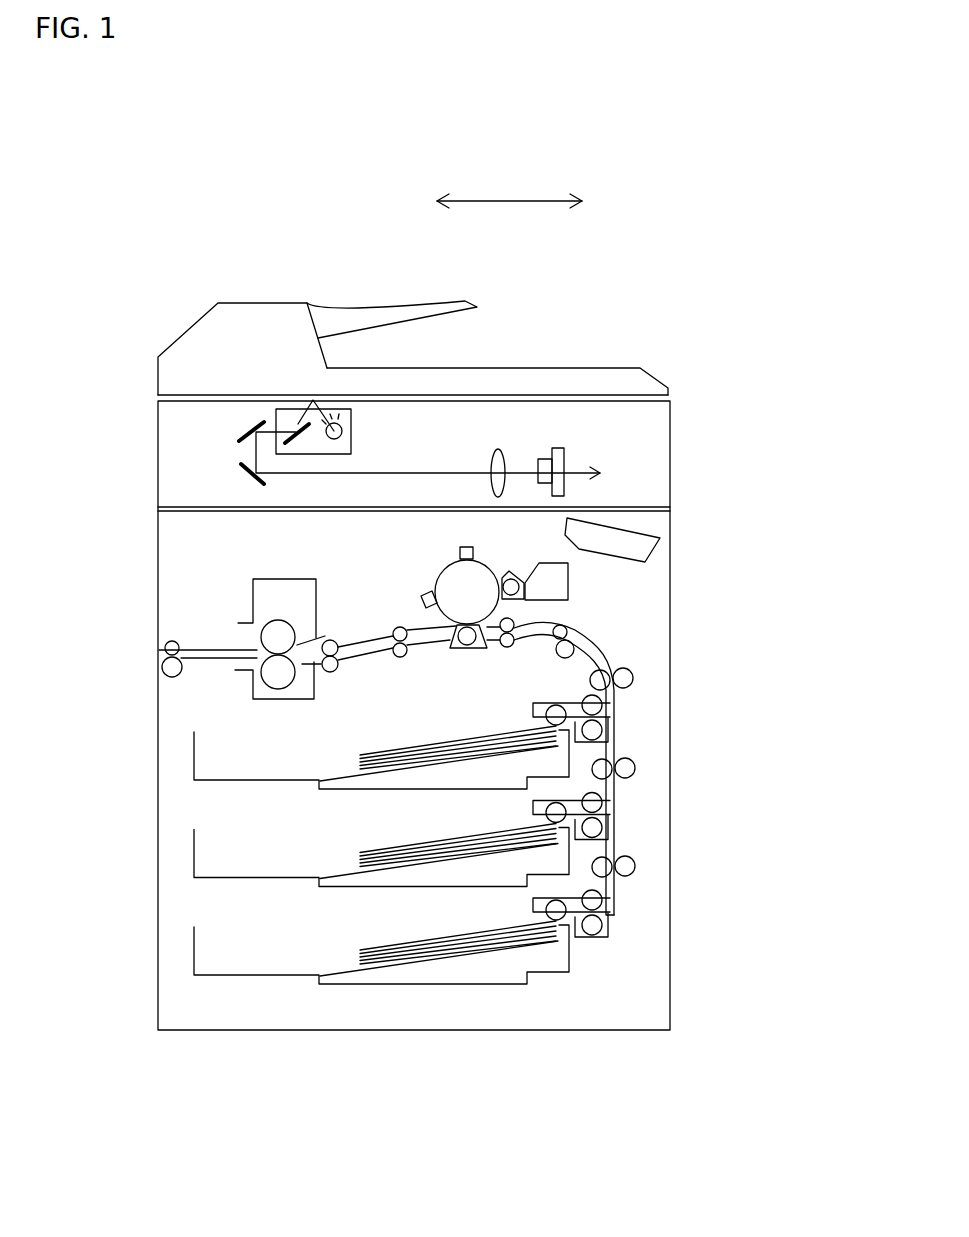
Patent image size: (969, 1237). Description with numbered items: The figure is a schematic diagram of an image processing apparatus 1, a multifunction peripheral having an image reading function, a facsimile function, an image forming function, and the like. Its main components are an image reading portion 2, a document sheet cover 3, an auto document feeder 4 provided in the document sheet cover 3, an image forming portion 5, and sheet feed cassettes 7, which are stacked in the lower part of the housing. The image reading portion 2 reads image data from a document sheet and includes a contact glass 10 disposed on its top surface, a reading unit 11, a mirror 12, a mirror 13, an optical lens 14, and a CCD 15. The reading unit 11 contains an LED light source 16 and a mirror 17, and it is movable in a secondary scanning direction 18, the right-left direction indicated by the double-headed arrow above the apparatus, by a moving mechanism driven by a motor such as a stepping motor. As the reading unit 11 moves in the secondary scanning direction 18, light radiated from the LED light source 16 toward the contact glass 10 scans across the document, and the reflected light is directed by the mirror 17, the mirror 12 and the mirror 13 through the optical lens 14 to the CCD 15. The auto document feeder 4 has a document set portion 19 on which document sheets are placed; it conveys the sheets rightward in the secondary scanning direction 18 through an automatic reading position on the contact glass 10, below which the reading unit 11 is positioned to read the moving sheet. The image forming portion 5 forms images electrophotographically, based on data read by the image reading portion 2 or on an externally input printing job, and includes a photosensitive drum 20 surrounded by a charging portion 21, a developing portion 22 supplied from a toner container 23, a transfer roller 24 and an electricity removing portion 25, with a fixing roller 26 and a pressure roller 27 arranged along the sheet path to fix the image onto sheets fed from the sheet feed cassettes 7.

The image processing apparatus 1 is at (190, 1065).
The image reading portion 2 is at (670, 440).
The document sheet cover 3 is at (650, 370).
The auto document feeder 4 is at (240, 302).
The image forming portion 5 is at (670, 585).
The sheet feed cassettes 7 is at (335, 790).
The contact glass 10 is at (600, 394).
The reading unit 11 is at (362, 423).
The mirror 12 is at (239, 432).
The mirror 13 is at (241, 472).
The optical lens 14 is at (491, 453).
The CCD 15 is at (556, 448).
The LED light source 16 is at (352, 436).
The mirror 17 is at (298, 426).
The secondary scanning direction 18 is at (513, 200).
The document set portion 19 is at (395, 303).
The photosensitive drum 20 is at (445, 570).
The charging portion 21 is at (466, 546).
The developing portion 22 is at (514, 572).
The toner container 23 is at (569, 584).
The transfer roller 24 is at (460, 650).
The electricity removing portion 25 is at (421, 596).
The fixing roller 26 is at (262, 623).
The pressure roller 27 is at (270, 689).